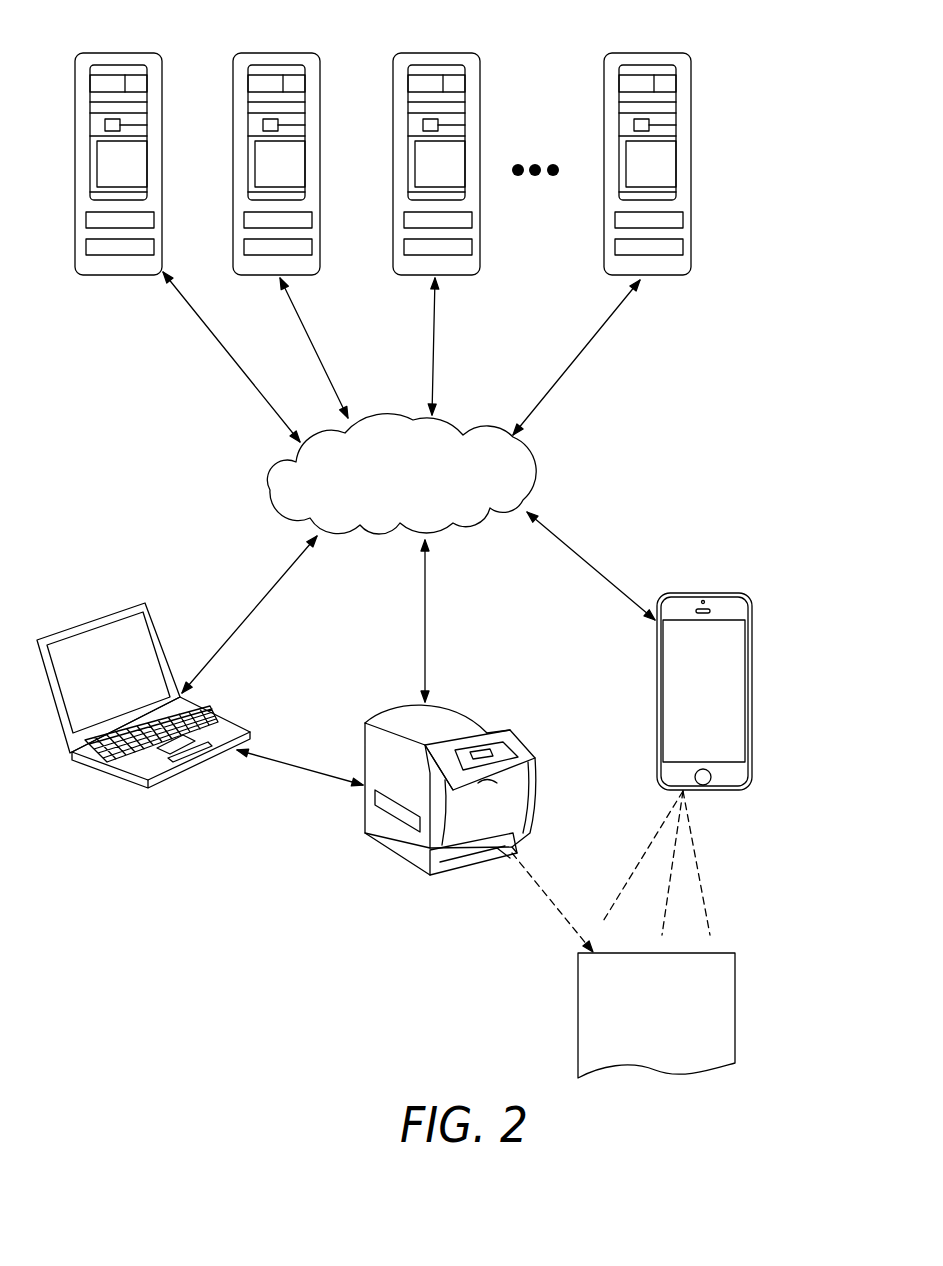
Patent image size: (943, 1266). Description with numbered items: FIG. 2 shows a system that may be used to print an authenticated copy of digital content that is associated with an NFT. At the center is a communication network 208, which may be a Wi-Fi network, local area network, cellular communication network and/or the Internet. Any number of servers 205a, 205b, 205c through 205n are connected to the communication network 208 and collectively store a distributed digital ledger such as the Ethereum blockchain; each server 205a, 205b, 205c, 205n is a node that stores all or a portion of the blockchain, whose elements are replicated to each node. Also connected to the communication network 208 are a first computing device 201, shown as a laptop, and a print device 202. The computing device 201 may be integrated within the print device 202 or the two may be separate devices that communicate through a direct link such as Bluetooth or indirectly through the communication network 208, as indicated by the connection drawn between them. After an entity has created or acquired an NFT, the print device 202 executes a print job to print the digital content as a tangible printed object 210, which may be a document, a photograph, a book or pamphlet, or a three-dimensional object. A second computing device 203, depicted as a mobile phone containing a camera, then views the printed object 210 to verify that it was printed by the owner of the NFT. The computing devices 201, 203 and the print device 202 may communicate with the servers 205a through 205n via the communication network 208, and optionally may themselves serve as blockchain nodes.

The computing device 201 is at (92, 623).
The print device 202 is at (412, 862).
The second computing device 203 is at (727, 592).
The server 205a is at (118, 52).
The server 205b is at (280, 52).
The server 205c is at (437, 52).
The server 205n is at (655, 52).
The communication network 208 is at (535, 475).
The printed object 210 is at (735, 1018).